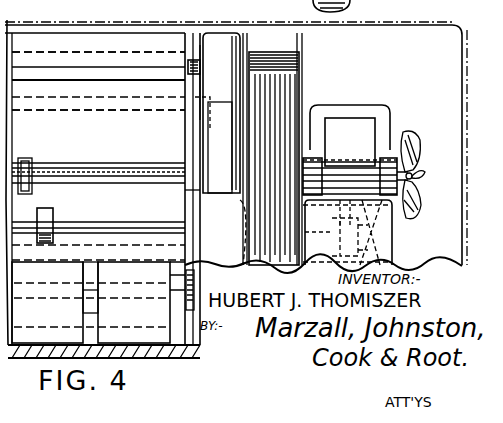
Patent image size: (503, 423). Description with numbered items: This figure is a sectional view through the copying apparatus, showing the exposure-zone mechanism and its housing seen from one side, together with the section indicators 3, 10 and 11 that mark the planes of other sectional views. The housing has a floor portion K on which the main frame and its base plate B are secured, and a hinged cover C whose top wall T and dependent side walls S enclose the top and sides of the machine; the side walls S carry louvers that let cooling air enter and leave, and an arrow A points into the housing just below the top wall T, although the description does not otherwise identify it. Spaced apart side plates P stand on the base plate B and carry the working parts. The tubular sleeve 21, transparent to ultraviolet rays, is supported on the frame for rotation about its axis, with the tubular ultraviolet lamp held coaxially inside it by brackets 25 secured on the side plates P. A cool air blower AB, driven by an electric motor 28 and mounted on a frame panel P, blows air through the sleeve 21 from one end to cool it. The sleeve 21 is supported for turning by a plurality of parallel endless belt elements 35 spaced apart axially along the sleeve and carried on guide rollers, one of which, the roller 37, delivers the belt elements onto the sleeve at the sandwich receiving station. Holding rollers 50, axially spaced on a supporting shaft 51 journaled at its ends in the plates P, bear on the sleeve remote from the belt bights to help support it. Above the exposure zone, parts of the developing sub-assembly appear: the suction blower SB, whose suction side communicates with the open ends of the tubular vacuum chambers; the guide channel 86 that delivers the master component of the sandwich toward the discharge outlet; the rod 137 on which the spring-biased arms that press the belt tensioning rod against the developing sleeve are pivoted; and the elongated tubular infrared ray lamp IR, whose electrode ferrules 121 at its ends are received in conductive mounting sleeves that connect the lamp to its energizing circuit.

The section line 3— 3 is at (12, 0).
The section line 10 / motor unit 10 is at (308, 22).
The section line 11 is at (212, 30).
The tubular sleeve 21 is at (83, 185).
The brackets 25 is at (200, 278).
The electric motor 28 is at (296, 235).
The endless belt elements 35 is at (70, 276).
The guide roller 37 is at (90, 276).
The holding rollers 50 is at (43, 220).
The supporting shaft 51 is at (113, 225).
The guide channel 86 is at (228, 52).
The electrode ferrules 121 is at (217, 145).
The rod 137 is at (35, 72).
The fan A is at (394, 46).
The cool air blower AB is at (240, 220).
The base plate B is at (148, 350).
The hinged cover C is at (445, 24).
The infrared ray lamp IR is at (70, 110).
The floor portion K is at (152, 3).
The side plates P is at (188, 200).
The side walls S is at (462, 92).
The suction pump or blower SB is at (290, 86).
The top wall T is at (255, 16).